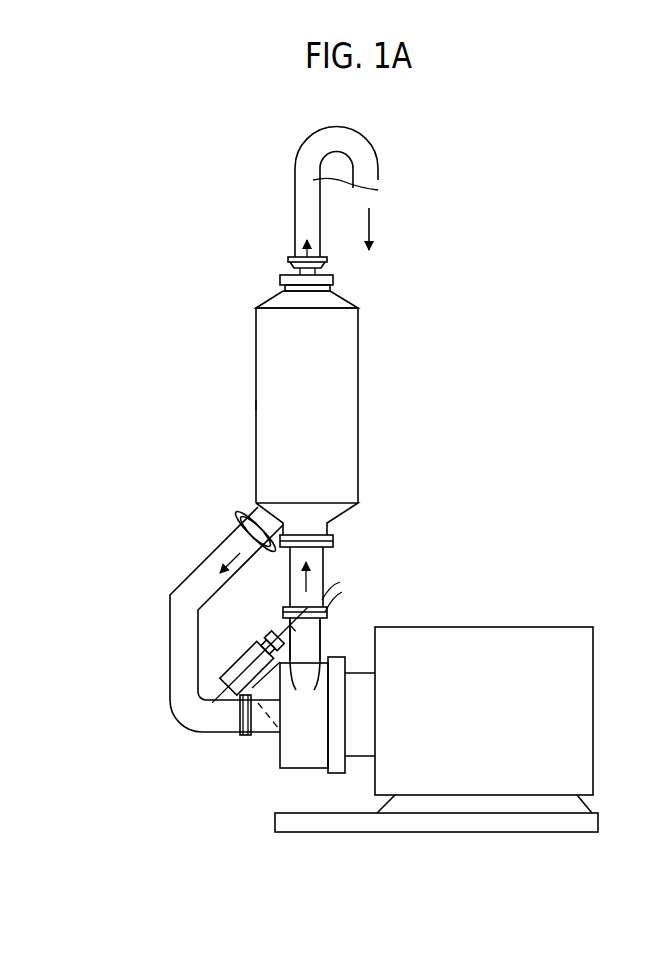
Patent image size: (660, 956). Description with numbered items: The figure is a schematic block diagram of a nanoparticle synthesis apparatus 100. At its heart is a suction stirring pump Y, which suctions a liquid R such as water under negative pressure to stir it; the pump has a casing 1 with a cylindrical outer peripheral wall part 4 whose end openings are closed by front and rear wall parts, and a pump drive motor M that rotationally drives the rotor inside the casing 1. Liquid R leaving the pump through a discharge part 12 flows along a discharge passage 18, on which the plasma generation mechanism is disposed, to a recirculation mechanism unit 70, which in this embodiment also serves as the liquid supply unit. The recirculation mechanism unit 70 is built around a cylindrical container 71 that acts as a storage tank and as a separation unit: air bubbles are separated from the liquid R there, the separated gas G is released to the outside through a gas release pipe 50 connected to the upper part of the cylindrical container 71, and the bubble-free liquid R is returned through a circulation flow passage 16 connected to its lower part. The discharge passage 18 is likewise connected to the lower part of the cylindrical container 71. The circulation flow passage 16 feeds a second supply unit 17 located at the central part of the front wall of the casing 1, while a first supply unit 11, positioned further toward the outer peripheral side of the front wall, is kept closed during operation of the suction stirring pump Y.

The nanoparticle synthesis apparatus 100 is at (560, 418).
The casing 1 is at (280, 772).
The cylindrical outer peripheral wall part 4 is at (297, 771).
The first supply unit 11 is at (232, 692).
The discharge part 12 is at (313, 640).
The circulation flow passage 16 is at (172, 660).
The second supply unit 17 is at (267, 720).
The discharge passage 18 is at (326, 555).
The gas release pipe 50 is at (352, 208).
The recirculation mechanism unit 70 is at (366, 361).
The cylindrical container 71 is at (350, 412).
The pump drive motor M is at (590, 703).
The gas G is at (387, 232).
The liquid R is at (312, 572).
The suction stirring pump Y is at (236, 783).